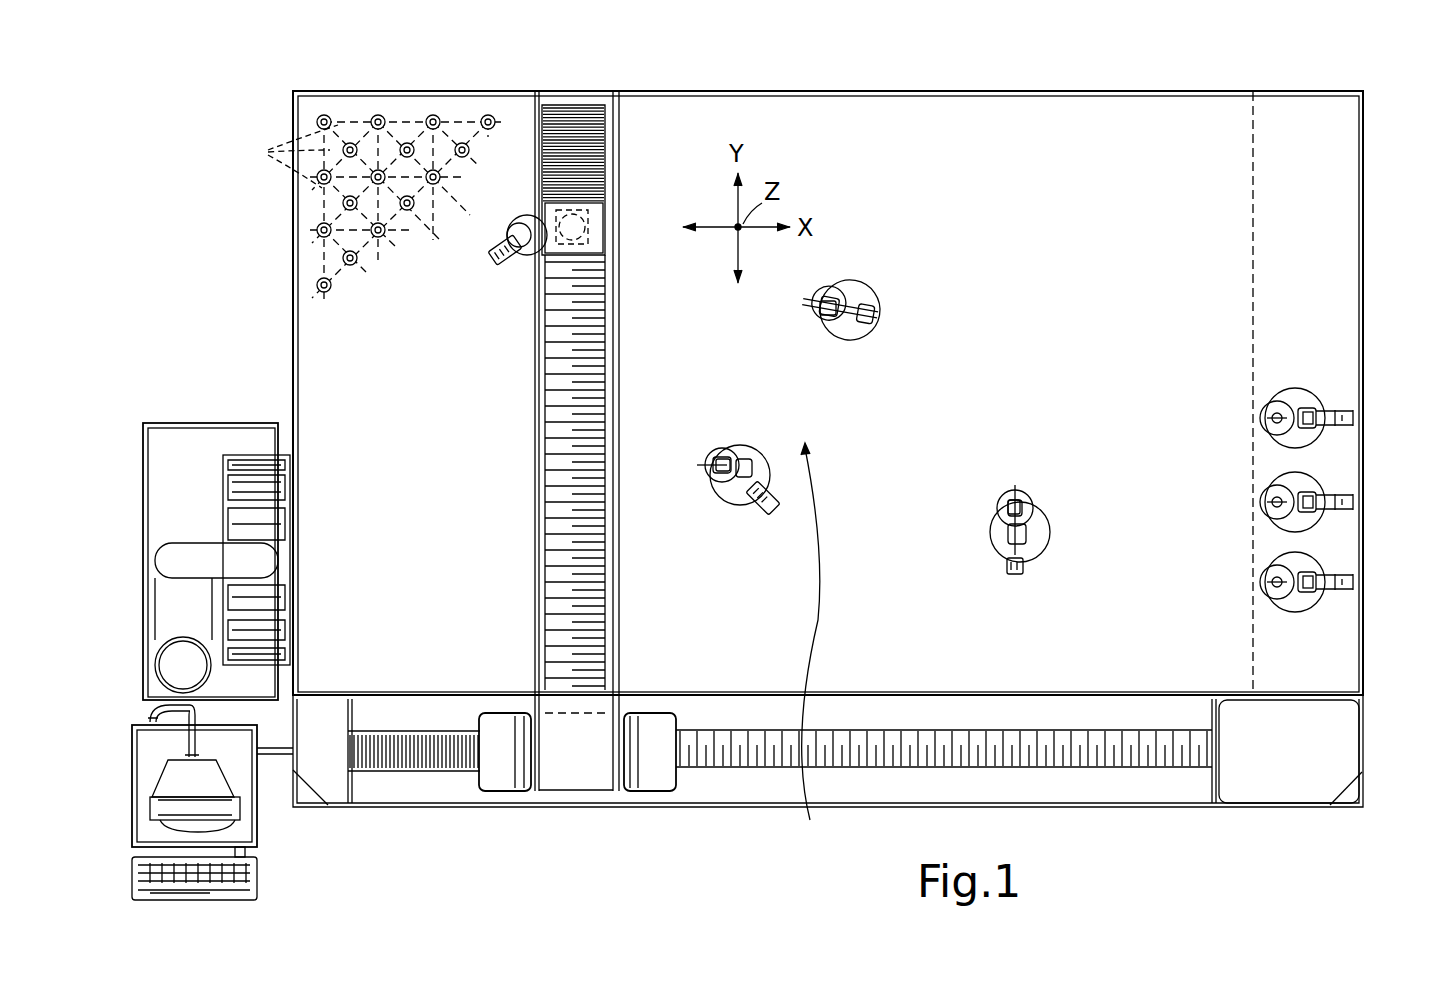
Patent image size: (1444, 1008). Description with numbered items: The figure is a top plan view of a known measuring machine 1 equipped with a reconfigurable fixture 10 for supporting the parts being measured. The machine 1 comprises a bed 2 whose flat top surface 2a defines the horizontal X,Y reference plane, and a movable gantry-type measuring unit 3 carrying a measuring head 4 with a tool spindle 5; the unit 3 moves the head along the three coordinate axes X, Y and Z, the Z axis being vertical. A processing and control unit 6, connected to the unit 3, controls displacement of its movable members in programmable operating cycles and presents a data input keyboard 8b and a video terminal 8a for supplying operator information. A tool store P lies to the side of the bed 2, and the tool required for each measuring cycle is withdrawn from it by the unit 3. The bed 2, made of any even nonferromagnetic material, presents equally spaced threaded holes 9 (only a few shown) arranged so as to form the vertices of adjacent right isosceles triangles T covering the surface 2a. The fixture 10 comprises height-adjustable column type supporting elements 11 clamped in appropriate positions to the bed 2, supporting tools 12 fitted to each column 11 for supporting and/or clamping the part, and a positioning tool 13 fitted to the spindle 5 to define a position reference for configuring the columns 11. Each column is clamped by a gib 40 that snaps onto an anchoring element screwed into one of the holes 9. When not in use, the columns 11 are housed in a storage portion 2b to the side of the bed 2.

The measuring machine 1 is at (597, 820).
The bed 2 is at (290, 349).
The flat top surface 2a is at (372, 315).
The storage portion 2b is at (1343, 250).
The measuring unit 3 is at (632, 800).
The measuring head 4 is at (590, 217).
The tool spindle 5 is at (632, 257).
The positioning tool 13 is at (572, 227).
The processing and control unit 6 is at (243, 785).
The video terminal 8a is at (165, 808).
The data input keyboard 8b is at (132, 865).
The threaded holes 9 is at (377, 117).
The reconfigurable fixture 10 is at (818, 652).
The column type supporting elements 11 is at (1300, 400).
The supporting tools 12 is at (826, 314).
The gib 40 is at (506, 262).
The tool store P is at (215, 490).
The right isosceles triangles T is at (258, 150).